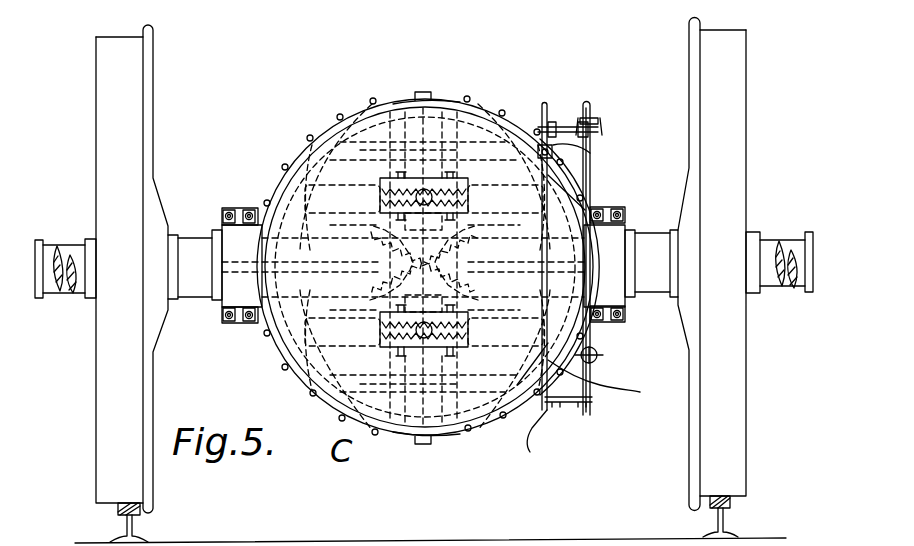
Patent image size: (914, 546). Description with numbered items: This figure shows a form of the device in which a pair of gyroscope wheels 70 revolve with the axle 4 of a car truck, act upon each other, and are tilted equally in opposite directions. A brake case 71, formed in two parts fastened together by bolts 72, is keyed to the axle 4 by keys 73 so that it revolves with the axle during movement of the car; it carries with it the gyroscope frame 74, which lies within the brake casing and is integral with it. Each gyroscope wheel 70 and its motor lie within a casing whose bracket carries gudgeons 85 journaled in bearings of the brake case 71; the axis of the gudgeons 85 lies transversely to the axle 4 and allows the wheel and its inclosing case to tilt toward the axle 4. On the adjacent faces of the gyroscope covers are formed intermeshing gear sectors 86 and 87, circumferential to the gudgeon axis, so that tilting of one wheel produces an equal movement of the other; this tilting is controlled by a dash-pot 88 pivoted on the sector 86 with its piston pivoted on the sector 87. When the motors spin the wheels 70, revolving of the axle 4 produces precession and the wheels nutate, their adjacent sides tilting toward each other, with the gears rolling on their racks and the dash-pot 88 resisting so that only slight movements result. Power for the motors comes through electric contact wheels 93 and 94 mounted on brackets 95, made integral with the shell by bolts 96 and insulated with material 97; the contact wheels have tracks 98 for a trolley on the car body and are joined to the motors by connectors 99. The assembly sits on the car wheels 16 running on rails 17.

The axle 4 is at (188, 236).
The wheel 16 is at (148, 440).
The rail 17 is at (133, 532).
The gyroscope wheels 70 is at (314, 123).
The brake case 71 is at (276, 201).
The bolts 72 is at (374, 104).
The keys 73 is at (222, 284).
The gyroscope frame 74 is at (440, 340).
The gudgeons 85 is at (462, 318).
The gear sector 86 is at (362, 239).
The gear sector 87 is at (368, 274).
The dash-pot 88 is at (482, 236).
The electric contact wheel 93 is at (543, 115).
The electric contact wheel 94 is at (590, 118).
The brackets 95 is at (585, 168).
The bolts 96 is at (558, 125).
The insulating material 97 is at (592, 130).
The tracks 98 is at (529, 441).
The connectors 99 is at (482, 99).